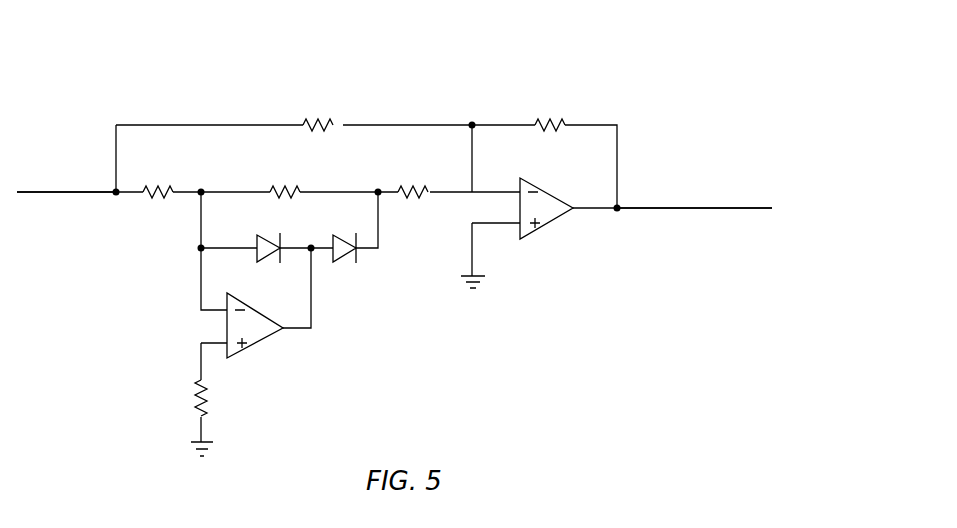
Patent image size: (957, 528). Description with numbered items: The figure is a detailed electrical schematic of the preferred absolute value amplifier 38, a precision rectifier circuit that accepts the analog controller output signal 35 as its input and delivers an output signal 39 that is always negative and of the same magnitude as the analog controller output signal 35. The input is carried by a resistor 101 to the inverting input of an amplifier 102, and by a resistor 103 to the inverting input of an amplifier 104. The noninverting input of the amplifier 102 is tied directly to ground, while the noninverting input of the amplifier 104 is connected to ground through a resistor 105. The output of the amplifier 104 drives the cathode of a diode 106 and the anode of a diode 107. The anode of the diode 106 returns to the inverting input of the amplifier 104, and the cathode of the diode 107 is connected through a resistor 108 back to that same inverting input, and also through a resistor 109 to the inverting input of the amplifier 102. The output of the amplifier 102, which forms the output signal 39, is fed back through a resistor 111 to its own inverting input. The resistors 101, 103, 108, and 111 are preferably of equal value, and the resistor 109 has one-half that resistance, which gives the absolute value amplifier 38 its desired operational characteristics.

The absolute value amplifier 38 is at (216, 88).
The analog controller output signal 35 is at (71, 191).
The output signal 39 is at (694, 207).
The resistor 101 is at (306, 123).
The resistor 111 is at (536, 123).
The resistor 103 is at (150, 190).
The resistor 108 is at (274, 190).
The resistor 109 is at (402, 192).
The amplifier 102 is at (542, 192).
The diode 106 is at (258, 237).
The diode 107 is at (333, 234).
The amplifier 104 is at (244, 300).
The resistor 105 is at (194, 405).